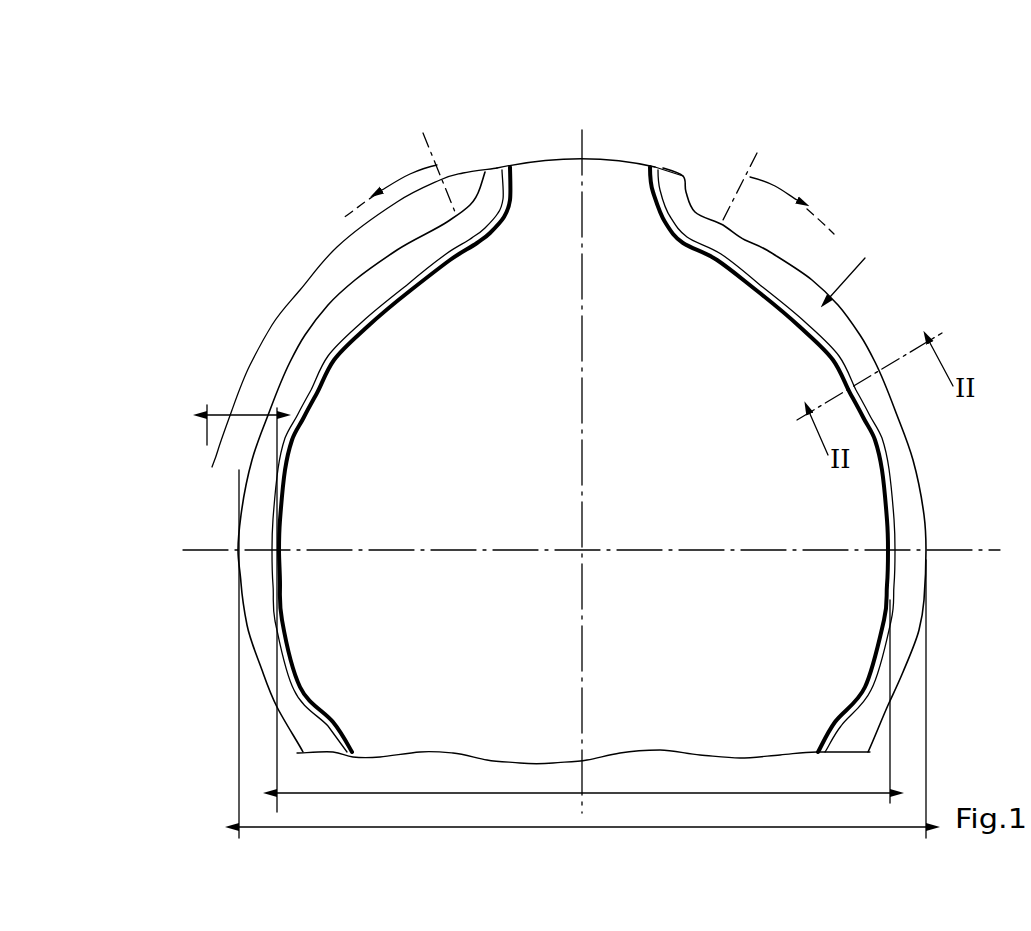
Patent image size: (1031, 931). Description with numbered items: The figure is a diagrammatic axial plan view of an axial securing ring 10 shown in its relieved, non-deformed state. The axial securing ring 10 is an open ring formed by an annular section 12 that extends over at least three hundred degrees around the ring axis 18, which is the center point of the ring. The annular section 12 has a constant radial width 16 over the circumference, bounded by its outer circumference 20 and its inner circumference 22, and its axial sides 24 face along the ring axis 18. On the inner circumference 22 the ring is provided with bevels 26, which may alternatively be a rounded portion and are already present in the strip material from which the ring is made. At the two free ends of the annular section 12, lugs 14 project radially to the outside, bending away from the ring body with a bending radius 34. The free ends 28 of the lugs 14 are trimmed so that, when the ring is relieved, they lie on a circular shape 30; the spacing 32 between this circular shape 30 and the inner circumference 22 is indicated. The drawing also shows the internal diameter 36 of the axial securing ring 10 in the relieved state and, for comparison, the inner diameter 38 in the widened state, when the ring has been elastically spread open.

The axial securing ring 10 is at (893, 238).
The annular section 12 is at (777, 181).
The lugs 14 is at (486, 190).
The radial width 16 is at (797, 327).
The ring axis 18 is at (586, 552).
The outer circumference 20 is at (927, 493).
The inner circumference 22 is at (877, 482).
The axial sides 24 is at (905, 583).
The bevels 26 is at (820, 343).
The free ends 28 is at (492, 164).
The circular shape 30 is at (337, 247).
The spacing 32 is at (243, 413).
The bending radius 34 is at (697, 198).
The internal diameter 36 is at (622, 795).
The inner diameter in the widened state 38 is at (530, 827).